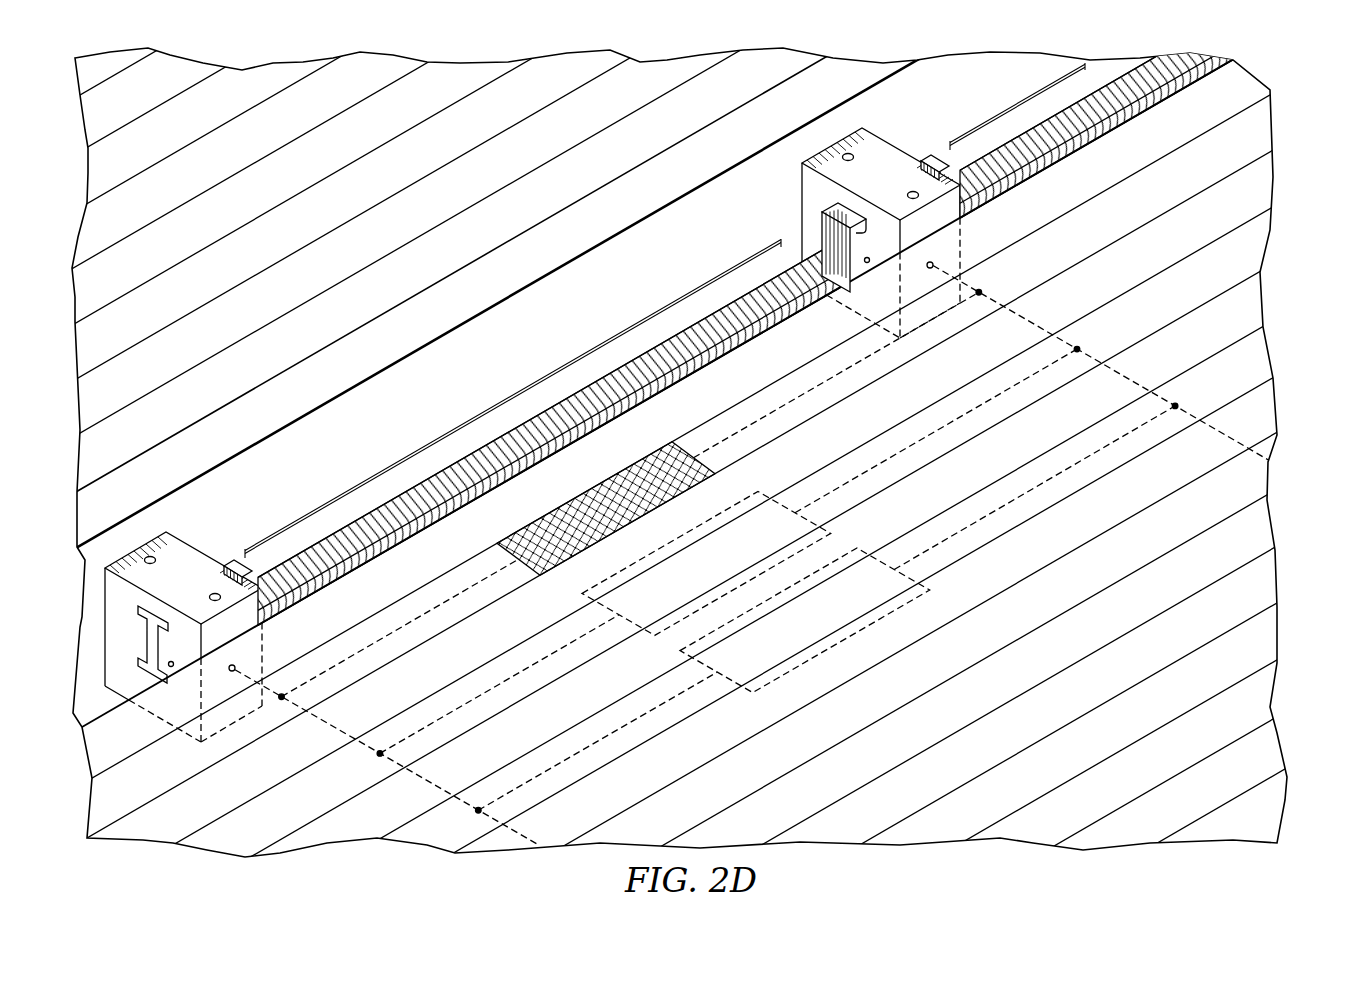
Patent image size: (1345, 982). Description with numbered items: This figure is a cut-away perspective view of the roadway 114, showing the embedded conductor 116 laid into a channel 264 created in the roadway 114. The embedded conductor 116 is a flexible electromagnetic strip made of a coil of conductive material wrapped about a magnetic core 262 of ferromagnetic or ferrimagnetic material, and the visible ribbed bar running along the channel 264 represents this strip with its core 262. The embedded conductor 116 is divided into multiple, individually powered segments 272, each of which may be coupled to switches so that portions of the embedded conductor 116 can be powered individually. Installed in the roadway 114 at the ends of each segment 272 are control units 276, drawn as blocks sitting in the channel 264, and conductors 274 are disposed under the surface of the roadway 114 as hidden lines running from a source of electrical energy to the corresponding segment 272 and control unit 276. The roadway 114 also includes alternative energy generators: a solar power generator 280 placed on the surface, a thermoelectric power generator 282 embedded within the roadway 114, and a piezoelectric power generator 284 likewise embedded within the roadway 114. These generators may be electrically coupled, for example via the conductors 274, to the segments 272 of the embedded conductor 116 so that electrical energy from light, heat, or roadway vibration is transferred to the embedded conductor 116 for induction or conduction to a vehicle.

The roadway 114 is at (1247, 196).
The embedded conductor 116 is at (779, 312).
The magnetic core 262 is at (720, 357).
The channel 264 is at (664, 232).
The segments 272 is at (525, 390).
The conductors 274 is at (1140, 384).
The control units 276 is at (187, 562).
The solar power generator 280 is at (521, 566).
The thermoelectric power generator 282 is at (792, 510).
The piezoelectric power generator 284 is at (888, 567).